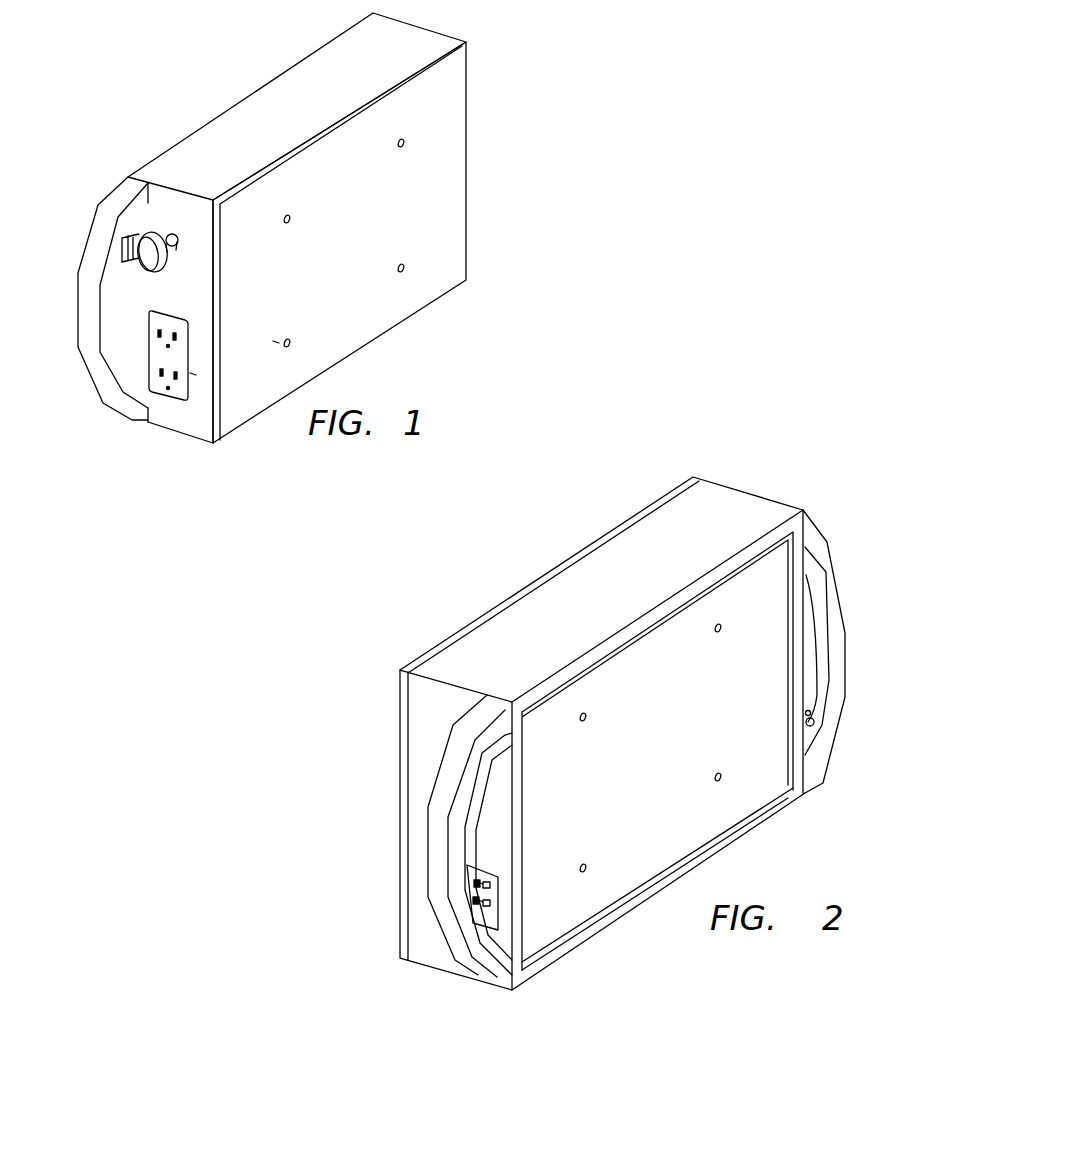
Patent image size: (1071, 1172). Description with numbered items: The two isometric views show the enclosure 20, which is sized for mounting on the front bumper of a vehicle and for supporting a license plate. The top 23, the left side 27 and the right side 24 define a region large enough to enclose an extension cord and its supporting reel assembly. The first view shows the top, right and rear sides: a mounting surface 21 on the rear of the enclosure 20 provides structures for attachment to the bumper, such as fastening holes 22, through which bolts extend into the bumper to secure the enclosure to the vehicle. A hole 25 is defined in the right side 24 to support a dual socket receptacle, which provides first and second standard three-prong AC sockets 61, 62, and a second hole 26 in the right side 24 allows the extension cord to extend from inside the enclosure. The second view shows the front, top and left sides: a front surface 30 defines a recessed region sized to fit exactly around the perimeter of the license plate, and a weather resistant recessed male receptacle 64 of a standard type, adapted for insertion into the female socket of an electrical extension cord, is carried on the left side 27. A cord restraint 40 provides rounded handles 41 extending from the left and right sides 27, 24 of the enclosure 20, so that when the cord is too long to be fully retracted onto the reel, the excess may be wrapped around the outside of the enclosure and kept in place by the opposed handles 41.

In FIG. 1, the enclosure 20 is at (477, 73).
In FIG. 1, the mounting surface 21 is at (427, 183).
In FIG. 1, the fastening holes 22 is at (405, 260).
In FIG. 1, the top 23 is at (280, 107).
In FIG. 1, the right side 24 is at (187, 422).
In FIG. 1, the hole 25 is at (190, 373).
In FIG. 1, the second hole 26 is at (172, 230).
In FIG. 2, the left side 27 is at (422, 703).
In FIG. 2, the front surface 30 is at (647, 788).
In FIG. 1, the cord restraint 40 is at (85, 435).
In FIG. 2, the rounded handles 41 is at (865, 590).
In FIG. 1, the first AC socket 61 is at (170, 323).
In FIG. 1, the second AC socket 62 is at (173, 363).
In FIG. 2, the recessed male receptacle 64 is at (492, 895).